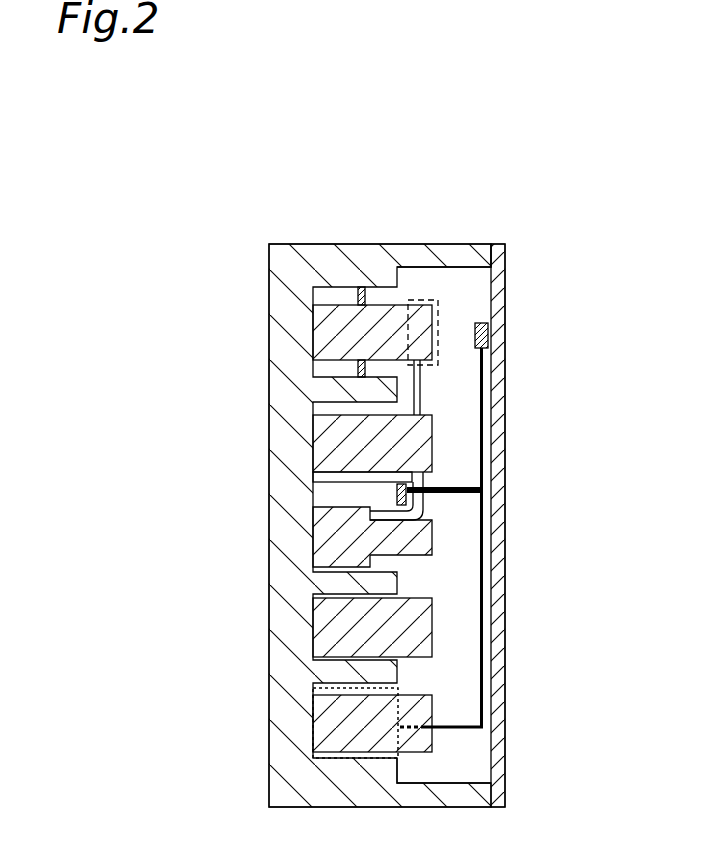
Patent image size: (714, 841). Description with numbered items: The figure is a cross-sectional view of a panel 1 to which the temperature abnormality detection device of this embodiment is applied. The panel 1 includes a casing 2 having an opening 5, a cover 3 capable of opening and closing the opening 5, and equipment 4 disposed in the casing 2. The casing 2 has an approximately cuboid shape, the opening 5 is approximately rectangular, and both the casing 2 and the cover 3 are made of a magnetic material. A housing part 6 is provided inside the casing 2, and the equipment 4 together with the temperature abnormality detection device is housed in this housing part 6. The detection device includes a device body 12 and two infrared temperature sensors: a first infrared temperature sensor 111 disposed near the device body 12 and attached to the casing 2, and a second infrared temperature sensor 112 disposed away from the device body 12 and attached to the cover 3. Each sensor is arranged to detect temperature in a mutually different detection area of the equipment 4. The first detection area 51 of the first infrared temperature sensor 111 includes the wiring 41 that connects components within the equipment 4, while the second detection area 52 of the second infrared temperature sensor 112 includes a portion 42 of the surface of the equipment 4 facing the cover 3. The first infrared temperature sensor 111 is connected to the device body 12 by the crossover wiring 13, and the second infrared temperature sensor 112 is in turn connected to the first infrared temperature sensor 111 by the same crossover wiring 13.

The panel 1 is at (528, 184).
The casing 2 is at (269, 322).
The cover 3 is at (505, 440).
The equipment 4 is at (432, 622).
The opening 5 is at (477, 268).
The housing part 6 is at (475, 755).
The device body 12 is at (313, 718).
The crossover wiring 13 is at (483, 396).
The wiring 41 is at (440, 496).
The portion 42 is at (432, 350).
The first detection area 51 is at (423, 482).
The second detection area 52 is at (438, 318).
The first infrared temperature sensor 111 is at (397, 490).
The second infrared temperature sensor 112 is at (488, 338).